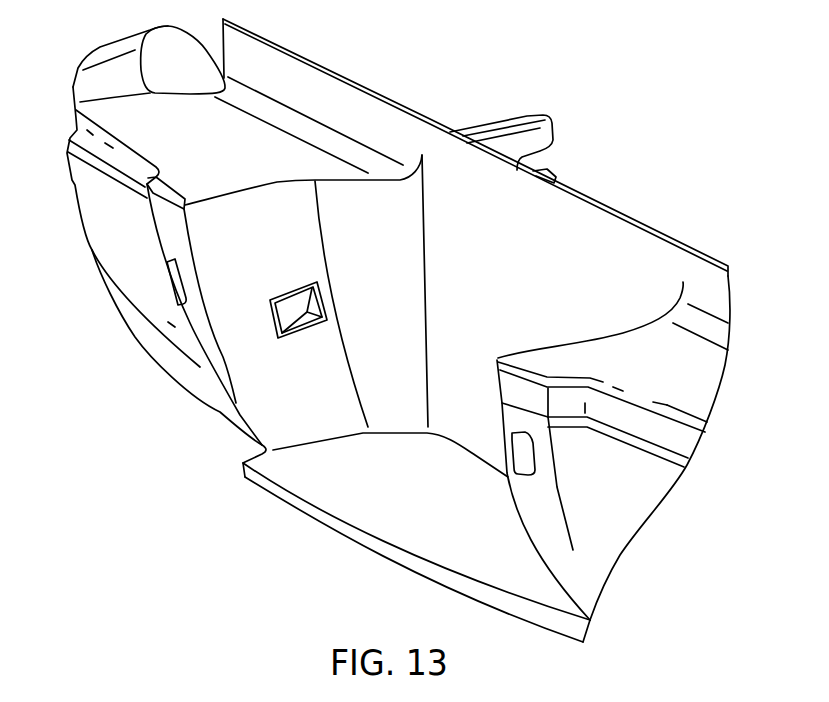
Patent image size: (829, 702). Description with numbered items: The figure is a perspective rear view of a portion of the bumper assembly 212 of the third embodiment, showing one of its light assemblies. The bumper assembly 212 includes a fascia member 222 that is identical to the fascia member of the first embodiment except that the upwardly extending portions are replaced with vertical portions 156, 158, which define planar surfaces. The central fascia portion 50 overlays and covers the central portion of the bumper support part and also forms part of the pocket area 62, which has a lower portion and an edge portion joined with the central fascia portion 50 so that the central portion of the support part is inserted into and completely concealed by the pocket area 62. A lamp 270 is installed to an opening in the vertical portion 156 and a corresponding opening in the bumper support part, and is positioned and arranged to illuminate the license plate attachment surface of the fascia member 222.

The bumper assembly 212 is at (660, 155).
The fascia member 222 is at (357, 110).
The vertical portion 156 is at (245, 357).
The lamp 270 is at (290, 292).
The vertical portion 158 is at (560, 347).
The central fascia portion 50 is at (425, 505).
The pocket area 62 is at (310, 507).